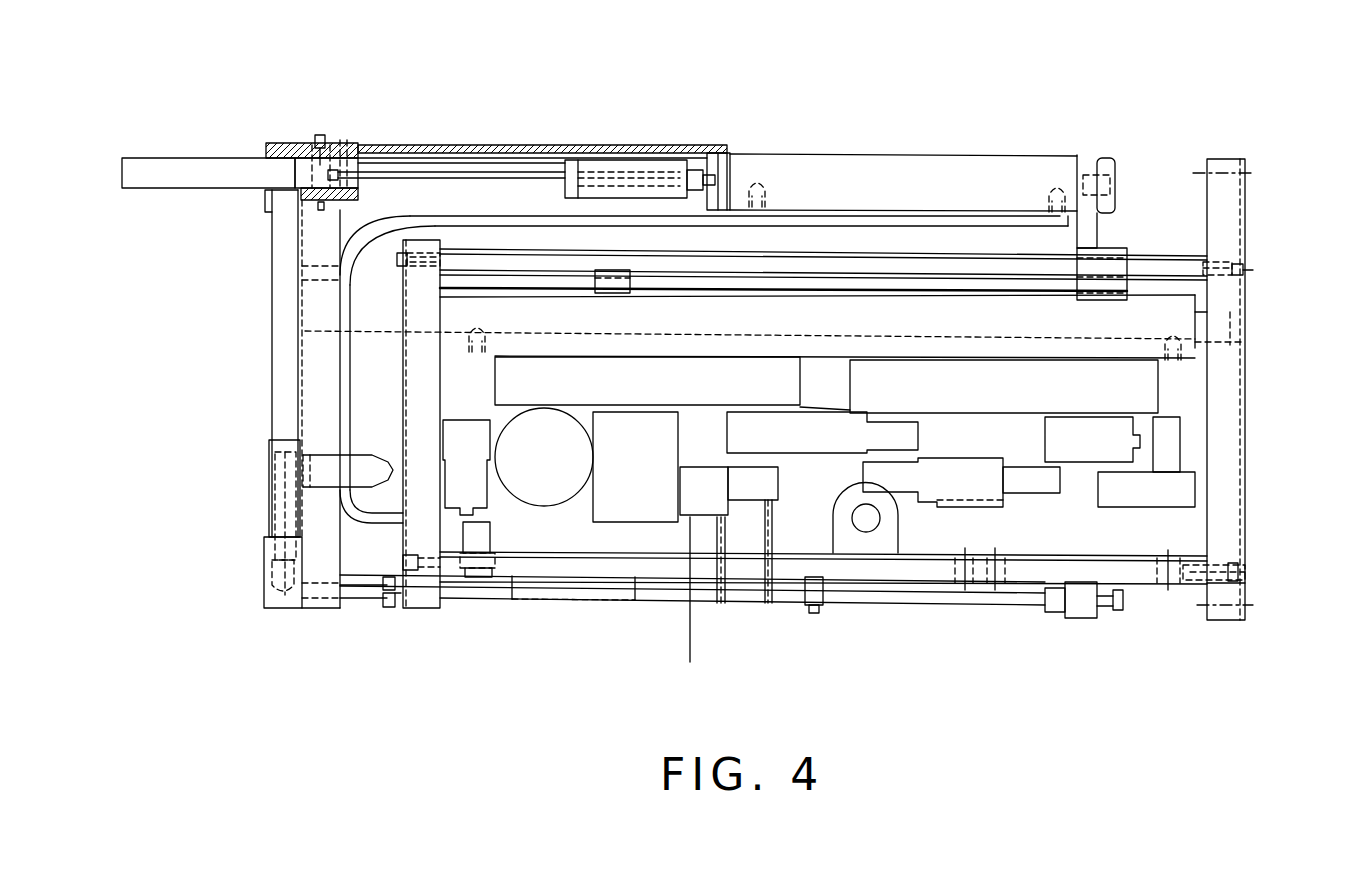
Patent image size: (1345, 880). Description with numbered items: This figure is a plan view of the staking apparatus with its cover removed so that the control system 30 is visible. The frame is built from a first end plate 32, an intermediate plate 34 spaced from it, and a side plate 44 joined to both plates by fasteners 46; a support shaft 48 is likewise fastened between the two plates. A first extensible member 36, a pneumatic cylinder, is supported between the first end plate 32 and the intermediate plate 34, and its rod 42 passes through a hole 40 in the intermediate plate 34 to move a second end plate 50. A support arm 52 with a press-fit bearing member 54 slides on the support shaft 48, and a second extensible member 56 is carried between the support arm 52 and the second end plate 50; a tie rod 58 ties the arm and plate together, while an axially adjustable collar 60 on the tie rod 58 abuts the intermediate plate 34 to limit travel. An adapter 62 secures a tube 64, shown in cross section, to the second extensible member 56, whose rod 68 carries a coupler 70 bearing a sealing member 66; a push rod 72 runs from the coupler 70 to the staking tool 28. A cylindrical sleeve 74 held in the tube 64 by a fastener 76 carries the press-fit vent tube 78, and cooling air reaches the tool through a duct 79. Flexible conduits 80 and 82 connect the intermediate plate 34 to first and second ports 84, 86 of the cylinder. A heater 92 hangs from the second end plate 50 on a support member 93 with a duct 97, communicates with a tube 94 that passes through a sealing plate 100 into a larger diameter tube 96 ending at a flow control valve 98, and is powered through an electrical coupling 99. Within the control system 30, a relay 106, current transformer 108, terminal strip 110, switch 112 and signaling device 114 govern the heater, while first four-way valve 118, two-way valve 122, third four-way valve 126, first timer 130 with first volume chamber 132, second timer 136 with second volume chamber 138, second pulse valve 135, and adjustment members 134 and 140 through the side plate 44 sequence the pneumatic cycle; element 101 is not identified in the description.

The vent tube 78 is at (150, 157).
The sleeve 74 is at (268, 145).
The fastener 76 is at (305, 143).
The duct 79 is at (328, 146).
The staking tool 28 is at (352, 168).
The push rod 72 is at (463, 160).
The tube 64 is at (495, 150).
The sealing member 66 is at (570, 158).
The coupler 70 is at (595, 160).
The axially adjustable collar 60 is at (628, 412).
The rod 68 is at (698, 168).
The adapter 62 is at (730, 150).
The second extensible member 56 is at (924, 155).
The flexible conduit 82 is at (862, 210).
The first port 84 is at (760, 178).
The second port 86 is at (1058, 185).
The support arm 52 is at (1085, 158).
The bearing member 54 is at (1113, 253).
The tie rod 58 is at (990, 284).
The support shaft 48 is at (1174, 257).
The relay 106 is at (632, 410).
The first end plate 32 is at (1248, 180).
The first extensible member 36 is at (1183, 363).
The second volume chamber 138 is at (1158, 385).
The second pulse valve 135 is at (1135, 423).
The switch 112 is at (1193, 473).
The control system 30 is at (1172, 527).
The hole 40 is at (400, 343).
The rod 42 is at (297, 330).
The heater 92 is at (272, 218).
The flexible conduit 80 is at (303, 240).
The second end plate 50 is at (303, 265).
The electrical coupling 99 is at (313, 457).
The duct 97 is at (267, 523).
The support member 93 is at (267, 583).
The larger diameter tube 96 is at (312, 600).
The tube 94 is at (370, 600).
The nut 101 is at (392, 610).
The sealing plate 100 is at (396, 608).
The intermediate plate 34 is at (430, 610).
The fasteners 46 is at (432, 255).
The side plate 44 is at (1148, 585).
The terminal strip 110 is at (636, 603).
The first timer 130 is at (690, 602).
The adjustment member 140 is at (727, 608).
The adjustment member 134 is at (776, 608).
The second timer 136 is at (790, 455).
The first volume chamber 132 is at (823, 455).
The first four-way valve 118 is at (835, 483).
The two-way valve 122 is at (488, 512).
The signaling device 114 is at (472, 580).
The current transformer 108 is at (897, 537).
The third four-way valve 126 is at (930, 500).
The flow control valve 98 is at (1075, 618).